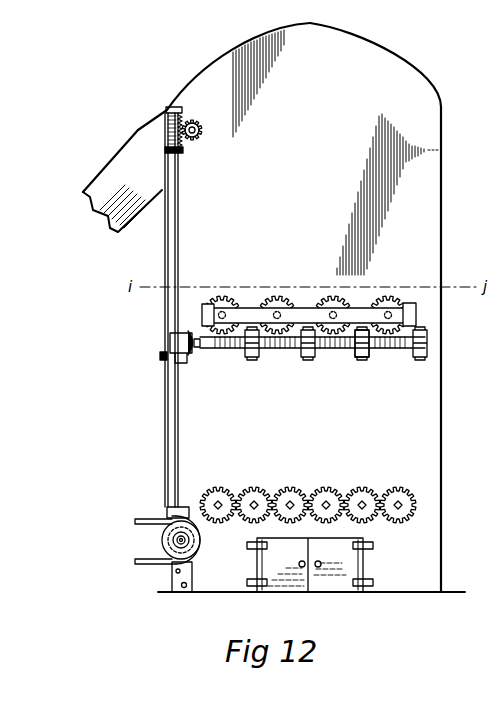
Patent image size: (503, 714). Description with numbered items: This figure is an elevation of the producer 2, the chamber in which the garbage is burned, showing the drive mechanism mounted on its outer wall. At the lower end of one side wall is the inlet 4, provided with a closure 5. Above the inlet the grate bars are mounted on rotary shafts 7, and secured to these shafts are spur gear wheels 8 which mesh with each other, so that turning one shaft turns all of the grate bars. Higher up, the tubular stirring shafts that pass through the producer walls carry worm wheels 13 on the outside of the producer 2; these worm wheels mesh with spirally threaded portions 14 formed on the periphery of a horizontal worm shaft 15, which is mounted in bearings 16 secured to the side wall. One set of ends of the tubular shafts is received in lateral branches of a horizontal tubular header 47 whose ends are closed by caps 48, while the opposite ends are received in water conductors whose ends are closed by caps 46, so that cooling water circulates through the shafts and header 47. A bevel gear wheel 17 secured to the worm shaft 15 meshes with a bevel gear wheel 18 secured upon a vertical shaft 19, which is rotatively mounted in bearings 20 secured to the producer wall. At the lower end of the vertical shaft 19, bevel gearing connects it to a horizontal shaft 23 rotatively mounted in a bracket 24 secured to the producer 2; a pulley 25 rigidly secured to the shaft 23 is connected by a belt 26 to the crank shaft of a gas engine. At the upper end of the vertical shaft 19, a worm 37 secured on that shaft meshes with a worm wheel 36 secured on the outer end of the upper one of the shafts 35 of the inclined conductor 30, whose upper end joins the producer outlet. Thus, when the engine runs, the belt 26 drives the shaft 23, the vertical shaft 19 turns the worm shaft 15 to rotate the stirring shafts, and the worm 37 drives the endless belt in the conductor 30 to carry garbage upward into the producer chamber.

The producer 2 is at (274, 307).
The inlet 4 is at (366, 563).
The closure 5 is at (321, 555).
The rotary shafts 7 is at (220, 503).
The spur gear wheels 8 is at (255, 503).
The worm wheels 13 is at (281, 296).
The spirally threaded portions 14 is at (277, 347).
The horizontal worm shaft 15 is at (410, 348).
The bearings 16 is at (308, 350).
The bevel gear wheel 17 is at (178, 336).
The bevel gear wheel 18 is at (160, 357).
The vertical shaft 19 is at (176, 406).
The bearings 20 is at (182, 152).
The horizontal shaft 23 is at (162, 541).
The bracket 24 is at (176, 578).
The pulley 25 is at (200, 552).
The belt 26 is at (136, 562).
The inclined conductor 30 is at (122, 190).
The shafts 35 is at (196, 121).
The worm wheel 36 is at (203, 127).
The worm 37 is at (168, 119).
The caps 46 is at (411, 305).
The horizontal tubular header 47 is at (358, 314).
The caps 48 is at (206, 310).